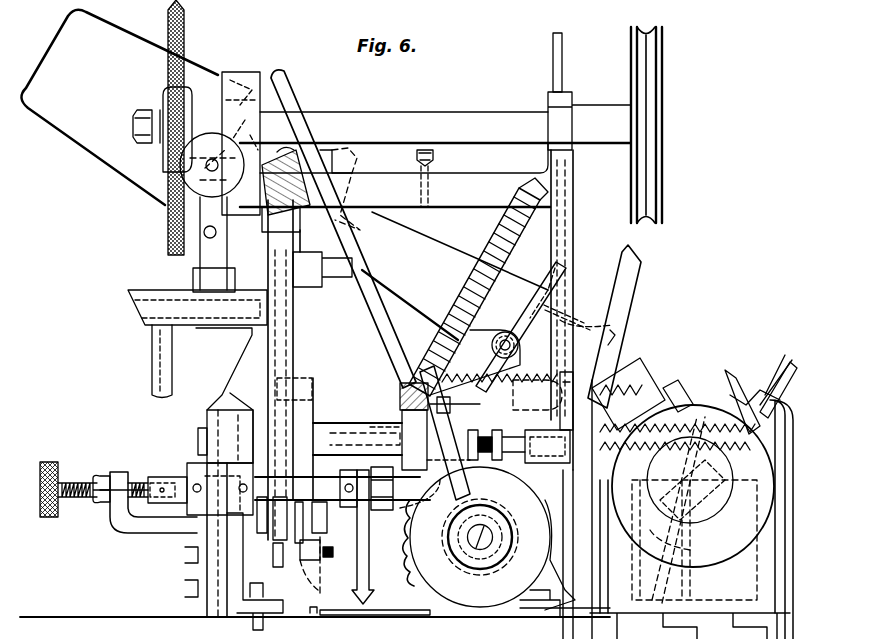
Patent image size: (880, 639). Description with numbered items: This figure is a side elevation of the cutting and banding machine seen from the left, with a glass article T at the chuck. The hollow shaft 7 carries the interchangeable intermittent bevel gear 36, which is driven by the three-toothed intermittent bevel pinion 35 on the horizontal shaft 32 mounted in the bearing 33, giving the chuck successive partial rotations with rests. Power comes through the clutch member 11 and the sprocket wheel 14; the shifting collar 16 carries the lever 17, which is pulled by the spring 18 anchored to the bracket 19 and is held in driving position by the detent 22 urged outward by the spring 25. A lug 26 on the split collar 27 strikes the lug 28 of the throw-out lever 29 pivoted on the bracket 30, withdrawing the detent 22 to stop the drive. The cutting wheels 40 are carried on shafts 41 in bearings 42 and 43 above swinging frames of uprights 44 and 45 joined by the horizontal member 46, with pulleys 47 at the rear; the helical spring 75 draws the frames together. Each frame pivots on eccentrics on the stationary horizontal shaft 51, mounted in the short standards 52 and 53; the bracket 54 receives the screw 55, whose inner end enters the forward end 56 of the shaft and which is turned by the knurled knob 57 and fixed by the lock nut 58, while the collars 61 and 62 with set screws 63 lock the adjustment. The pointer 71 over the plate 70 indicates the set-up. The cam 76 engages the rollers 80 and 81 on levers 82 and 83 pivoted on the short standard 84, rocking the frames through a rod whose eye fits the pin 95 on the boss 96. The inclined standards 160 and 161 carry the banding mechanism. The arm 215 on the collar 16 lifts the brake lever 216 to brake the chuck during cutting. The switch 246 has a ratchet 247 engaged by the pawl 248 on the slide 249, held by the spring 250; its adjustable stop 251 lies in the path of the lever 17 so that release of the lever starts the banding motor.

The tool plate T is at (92, 160).
The hollow shaft 7 is at (406, 240).
The clutch member 11 is at (470, 555).
The sprocket wheel 14 is at (410, 540).
The shifting collar 16 is at (486, 570).
The lever 17 is at (372, 323).
The spring 18 is at (440, 328).
The bracket 19 is at (574, 388).
The detent 22 is at (406, 402).
The spring 25 is at (400, 384).
The lug 26 is at (512, 405).
The split collar 27 is at (613, 326).
The lug 28 is at (561, 288).
The throw-out lever 29 is at (565, 45).
The bracket 30 is at (505, 330).
The horizontal shaft 32 is at (198, 438).
The bearing 33 is at (207, 414).
The intermittent bevel pinion 35 is at (400, 422).
The intermittent bevel gear 36 is at (500, 233).
The cutting wheel 40 is at (184, 24).
The horizontal shaft 41 is at (481, 112).
The bearing 42 is at (242, 72).
The bearing 43 is at (573, 103).
The upright member 44 is at (294, 355).
The upright member 45 is at (574, 228).
The horizontal member 46 is at (488, 173).
The pulley 47 is at (660, 28).
The stationary horizontal shaft 51 is at (145, 503).
The short standard 52 is at (212, 570).
The short standard 53 is at (545, 612).
The bracket 54 is at (118, 530).
The screw 55 is at (74, 482).
The forward end of the shaft 56 is at (160, 477).
The knurled knob 57 is at (46, 462).
The lock nut 58 is at (105, 476).
The collar 61 is at (195, 505).
The collar 62 is at (250, 462).
The set screw 63 is at (244, 484).
The plate 70 is at (400, 604).
The pointer 71 is at (369, 560).
The helical spring 75 is at (434, 156).
The cam 76 is at (310, 385).
The roller 80 is at (320, 600).
The roller 81 is at (320, 545).
The lever 82 is at (280, 567).
The lever 83 is at (325, 558).
The short standard 84 is at (314, 614).
The pin 95 is at (342, 278).
The boss 96 is at (318, 290).
The inclined standard 160 is at (353, 160).
The inclined standard 161 is at (634, 280).
The arm 215 is at (688, 568).
The brake lever 216 is at (700, 540).
The switch 246 is at (660, 388).
The ratchet 247 is at (720, 512).
The pawl 248 is at (697, 390).
The slide 249 is at (535, 428).
The spring 250 is at (737, 390).
The adjustable stop 251 is at (405, 448).